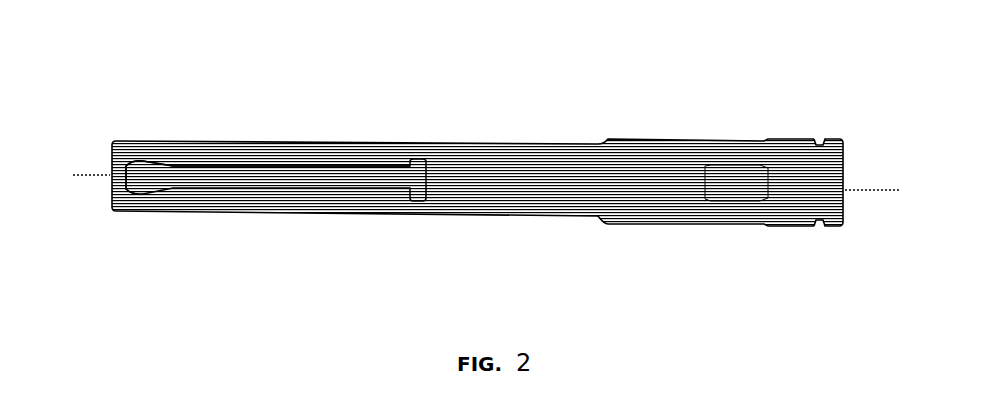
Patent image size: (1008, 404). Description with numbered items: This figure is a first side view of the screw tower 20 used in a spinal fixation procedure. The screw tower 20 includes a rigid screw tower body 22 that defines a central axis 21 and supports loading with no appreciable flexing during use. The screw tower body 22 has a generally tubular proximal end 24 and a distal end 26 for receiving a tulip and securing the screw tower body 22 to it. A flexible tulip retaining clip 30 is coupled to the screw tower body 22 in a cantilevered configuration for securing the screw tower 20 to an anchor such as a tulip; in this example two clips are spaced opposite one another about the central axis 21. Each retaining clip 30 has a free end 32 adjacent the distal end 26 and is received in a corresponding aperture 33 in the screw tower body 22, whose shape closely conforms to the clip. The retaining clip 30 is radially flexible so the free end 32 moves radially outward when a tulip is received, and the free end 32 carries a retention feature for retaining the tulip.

The screw tower 20 is at (571, 93).
The central axis 21 is at (848, 181).
The screw tower body 22 is at (472, 135).
The proximal end 24 is at (851, 126).
The distal end 26 is at (97, 130).
The tulip retaining clip 30 is at (292, 162).
The free end 32 is at (142, 152).
The aperture 33 is at (182, 151).